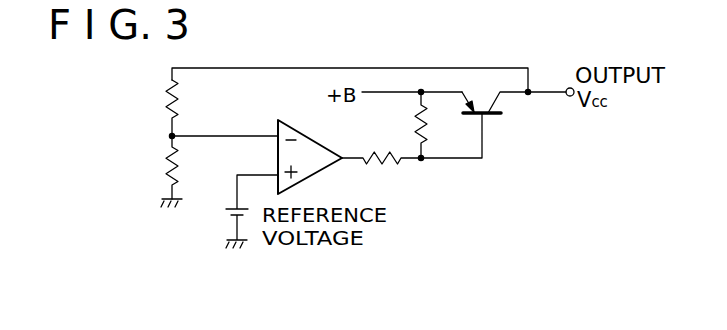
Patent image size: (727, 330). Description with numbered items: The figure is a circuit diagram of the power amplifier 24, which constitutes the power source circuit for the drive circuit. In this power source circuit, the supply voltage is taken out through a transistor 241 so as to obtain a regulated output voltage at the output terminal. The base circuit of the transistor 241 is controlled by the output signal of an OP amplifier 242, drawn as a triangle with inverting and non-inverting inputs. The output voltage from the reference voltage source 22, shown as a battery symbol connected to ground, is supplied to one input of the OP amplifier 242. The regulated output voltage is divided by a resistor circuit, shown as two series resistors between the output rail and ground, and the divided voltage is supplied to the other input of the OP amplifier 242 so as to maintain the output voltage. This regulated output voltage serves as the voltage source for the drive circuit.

The reference voltage source 22 is at (228, 210).
The power amplifier 24 is at (478, 156).
The transistor 241 is at (497, 103).
The OP amplifier 242 is at (318, 146).